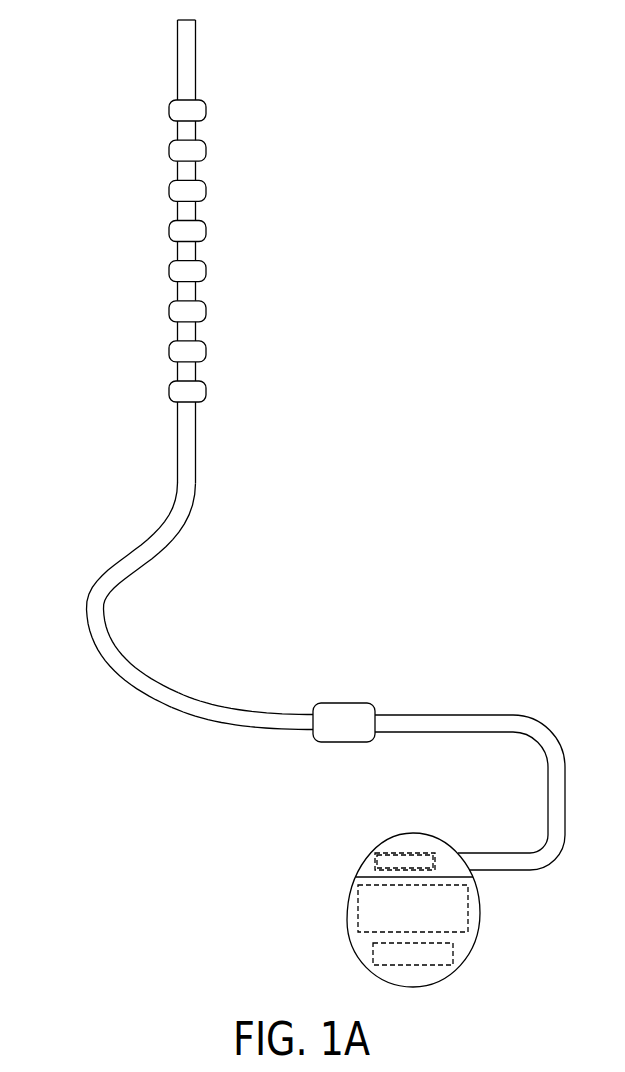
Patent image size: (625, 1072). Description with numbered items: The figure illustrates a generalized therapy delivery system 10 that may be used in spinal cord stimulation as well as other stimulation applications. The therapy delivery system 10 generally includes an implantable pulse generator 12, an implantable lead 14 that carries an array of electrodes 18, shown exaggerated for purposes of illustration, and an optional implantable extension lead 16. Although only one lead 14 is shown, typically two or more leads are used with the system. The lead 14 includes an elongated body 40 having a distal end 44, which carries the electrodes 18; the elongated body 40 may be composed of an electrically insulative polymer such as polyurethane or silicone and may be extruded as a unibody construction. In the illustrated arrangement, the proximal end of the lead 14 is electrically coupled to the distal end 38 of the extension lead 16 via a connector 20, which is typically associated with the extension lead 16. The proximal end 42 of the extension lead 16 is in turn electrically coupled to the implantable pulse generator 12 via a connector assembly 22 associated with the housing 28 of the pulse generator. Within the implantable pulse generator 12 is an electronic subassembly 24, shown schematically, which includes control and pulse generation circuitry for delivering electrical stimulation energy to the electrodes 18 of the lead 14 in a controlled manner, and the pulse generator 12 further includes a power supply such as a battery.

The therapy delivery system 10 is at (322, 99).
The implantable pulse generator 12 is at (368, 876).
The implantable lead 14 is at (197, 457).
The implantable extension lead 16 is at (443, 723).
The electrodes 18 is at (218, 95).
The connector 20 is at (345, 703).
The connector assembly 22 is at (392, 838).
The electronic subassembly 24 is at (480, 920).
The housing 28 is at (415, 832).
The distal end of extension lead 38 is at (258, 707).
The elongated body 40 is at (88, 627).
The proximal end of extension lead 42 is at (490, 852).
The distal end of elongated body 44 is at (177, 423).